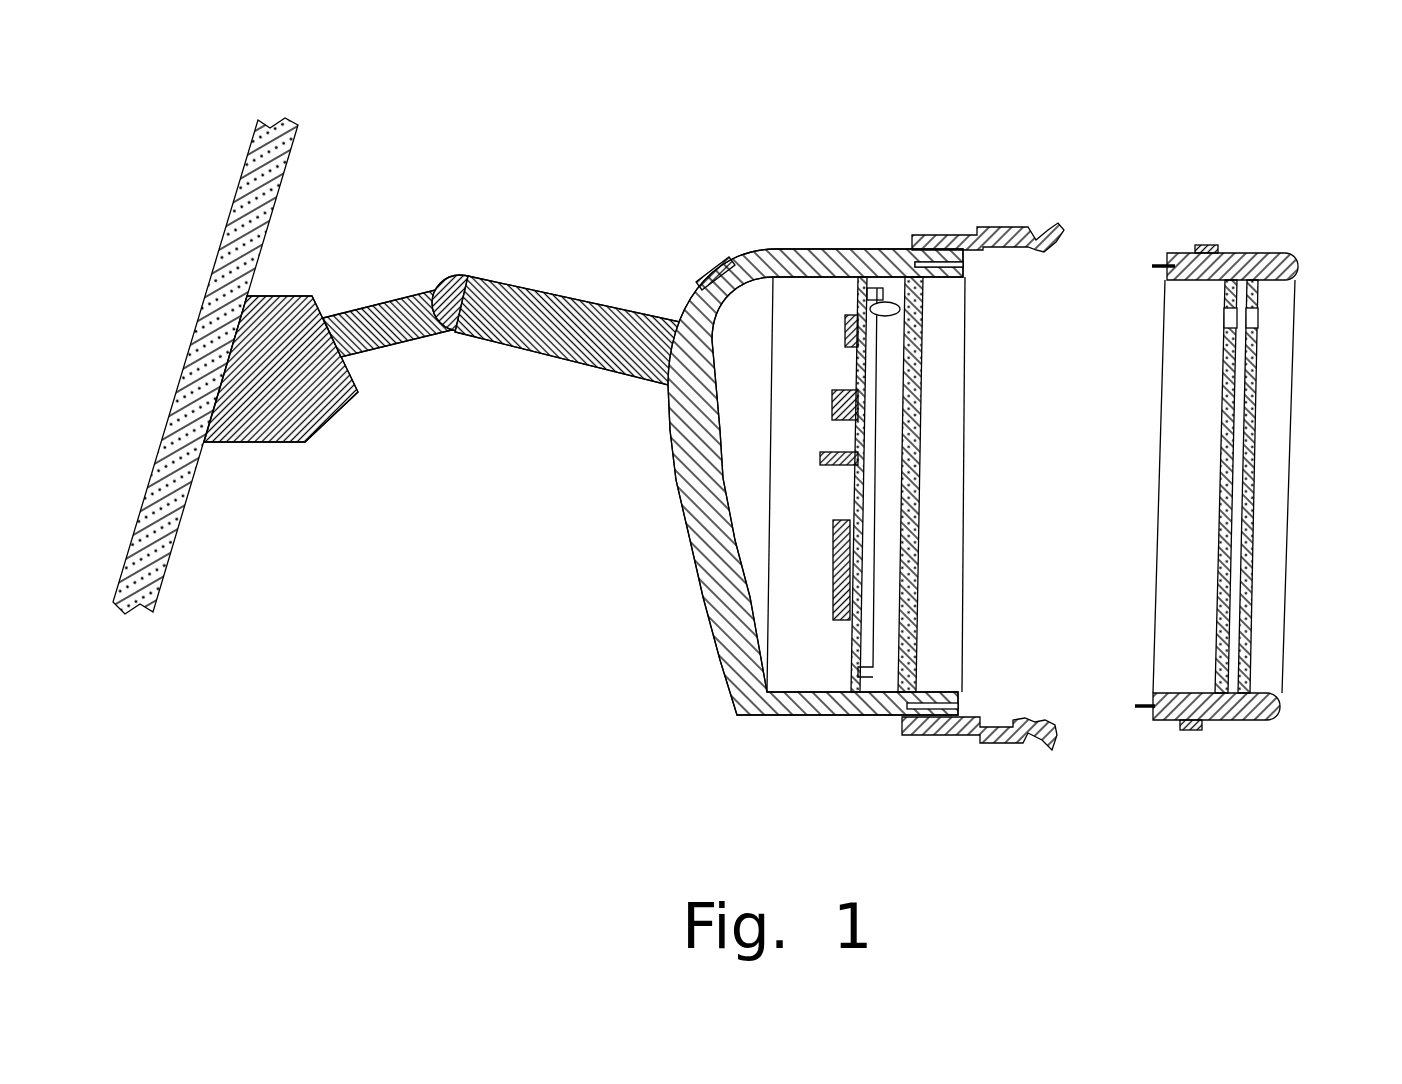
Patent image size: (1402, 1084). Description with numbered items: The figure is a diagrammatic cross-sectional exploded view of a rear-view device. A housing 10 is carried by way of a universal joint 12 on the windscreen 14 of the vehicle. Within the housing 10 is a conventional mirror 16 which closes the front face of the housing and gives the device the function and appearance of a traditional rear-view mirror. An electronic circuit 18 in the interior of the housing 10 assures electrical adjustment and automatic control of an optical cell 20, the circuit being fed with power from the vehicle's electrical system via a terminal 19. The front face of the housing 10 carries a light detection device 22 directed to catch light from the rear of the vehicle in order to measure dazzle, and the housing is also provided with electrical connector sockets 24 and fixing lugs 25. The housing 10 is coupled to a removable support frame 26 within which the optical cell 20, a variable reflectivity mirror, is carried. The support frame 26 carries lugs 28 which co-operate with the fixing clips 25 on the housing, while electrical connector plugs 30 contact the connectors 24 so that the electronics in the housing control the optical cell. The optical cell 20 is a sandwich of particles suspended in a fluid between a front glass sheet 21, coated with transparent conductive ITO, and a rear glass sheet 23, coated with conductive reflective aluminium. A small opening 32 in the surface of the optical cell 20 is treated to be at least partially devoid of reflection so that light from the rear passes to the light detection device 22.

The housing 10 is at (677, 532).
The universal joint 12 is at (448, 268).
The windscreen 14 is at (247, 168).
The conventional mirror 16 is at (933, 515).
The electronic circuit 18 is at (847, 483).
The terminal 19 is at (703, 272).
The optical cell 20 is at (1256, 500).
The front glass sheet 21 is at (1250, 602).
The light detection device 22 is at (900, 308).
The rear glass sheet 23 is at (1217, 563).
The electrical connector sockets 24 is at (970, 268).
The fixing lugs 25 is at (1017, 222).
The removable support frame 26 is at (1307, 260).
The lugs 28 is at (1182, 733).
The electrical connector plugs 30 is at (1148, 257).
The small opening 32 is at (1258, 317).